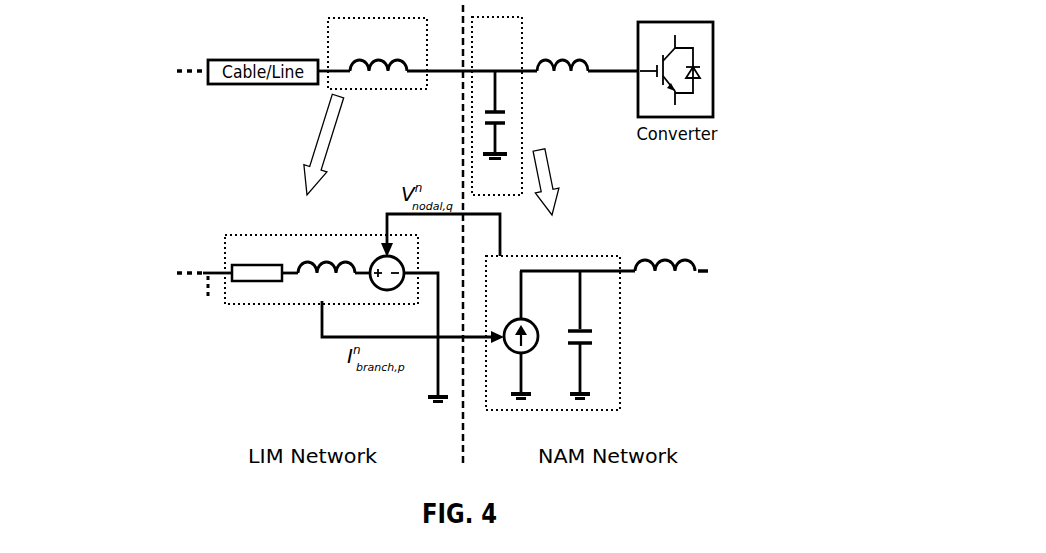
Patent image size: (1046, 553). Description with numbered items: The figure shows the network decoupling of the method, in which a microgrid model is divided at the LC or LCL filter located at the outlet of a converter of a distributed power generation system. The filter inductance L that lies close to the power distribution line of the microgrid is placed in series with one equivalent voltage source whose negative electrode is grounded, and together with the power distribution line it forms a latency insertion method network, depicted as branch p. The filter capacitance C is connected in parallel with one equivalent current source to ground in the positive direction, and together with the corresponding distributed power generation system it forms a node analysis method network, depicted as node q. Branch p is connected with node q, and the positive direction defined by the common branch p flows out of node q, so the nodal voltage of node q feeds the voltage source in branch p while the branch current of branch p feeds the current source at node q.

The inductance L is at (458, 53).
The capacitance C is at (497, 106).
The branch p is at (312, 306).
The node q is at (597, 319).